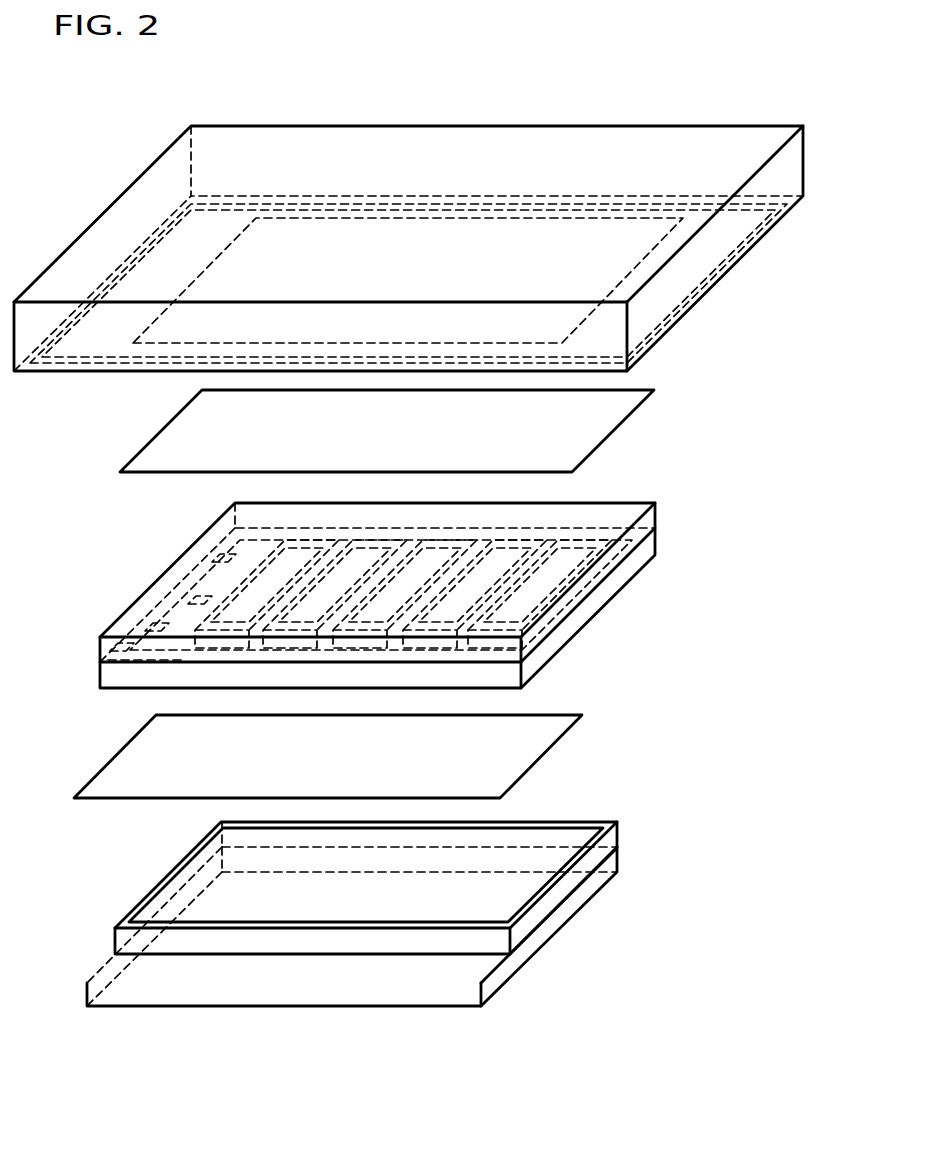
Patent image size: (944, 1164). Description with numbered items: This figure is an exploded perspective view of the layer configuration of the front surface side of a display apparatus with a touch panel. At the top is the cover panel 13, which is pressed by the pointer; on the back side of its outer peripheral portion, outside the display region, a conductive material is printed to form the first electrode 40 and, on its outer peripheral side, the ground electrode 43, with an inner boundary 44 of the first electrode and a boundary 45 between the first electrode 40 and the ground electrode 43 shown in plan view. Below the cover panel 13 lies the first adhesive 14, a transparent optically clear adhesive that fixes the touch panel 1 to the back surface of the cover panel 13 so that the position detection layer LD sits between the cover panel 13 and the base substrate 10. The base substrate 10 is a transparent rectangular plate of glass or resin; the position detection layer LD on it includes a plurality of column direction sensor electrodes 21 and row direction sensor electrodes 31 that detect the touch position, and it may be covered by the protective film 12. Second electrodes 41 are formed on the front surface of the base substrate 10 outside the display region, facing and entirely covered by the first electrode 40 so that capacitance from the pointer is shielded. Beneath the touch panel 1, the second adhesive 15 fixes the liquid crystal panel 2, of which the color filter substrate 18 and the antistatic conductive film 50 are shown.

The touch panel 1 is at (451, 457).
The liquid crystal panel 2 is at (391, 904).
The base substrate 10 is at (627, 572).
The protective film 12 is at (406, 594).
The cover panel 13 is at (431, 248).
The first adhesive 14 is at (598, 423).
The second adhesive 15 is at (518, 750).
The color filter substrate 18 is at (352, 926).
The column direction sensor electrodes 21 is at (483, 597).
The row direction sensor electrodes 31 is at (502, 607).
The second electrodes 41 is at (520, 640).
The first electrode 40 is at (738, 250).
The ground electrode 43 is at (712, 283).
The inner boundary of the first electrode 44 is at (233, 243).
The boundary between the first electrode and the ground electrode 45 is at (133, 267).
The antistatic conductive film 50 is at (528, 885).
The position detection layer LD is at (446, 613).